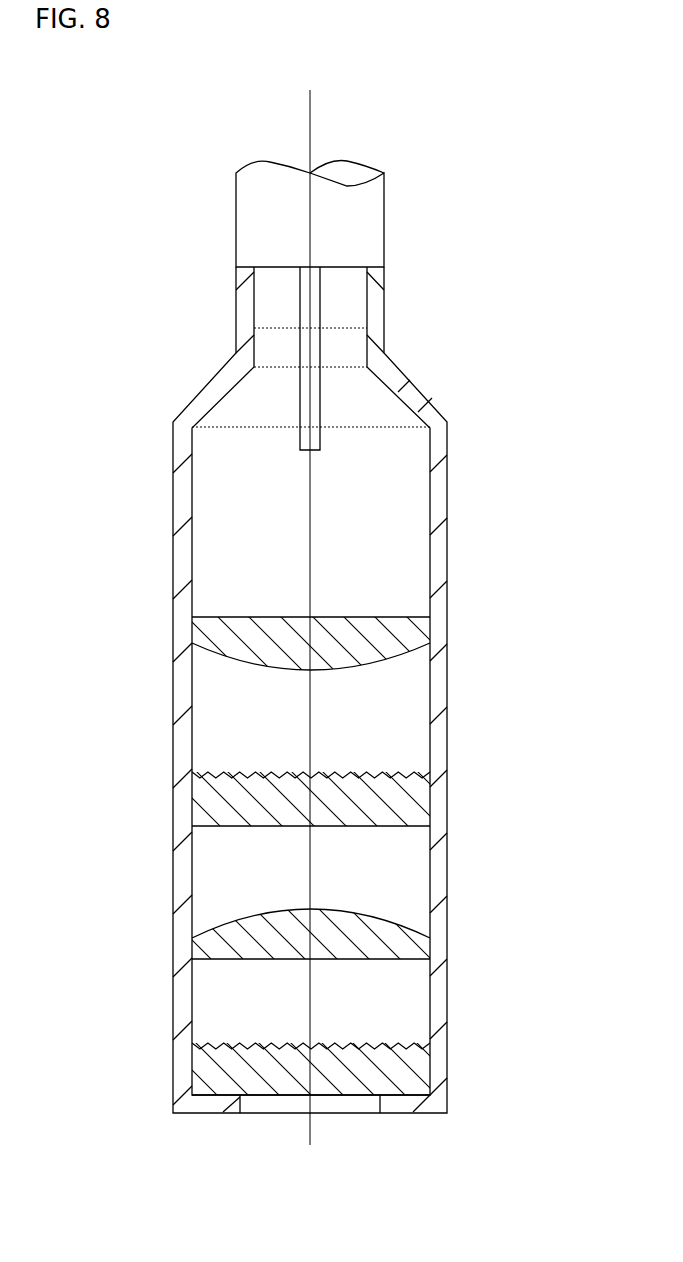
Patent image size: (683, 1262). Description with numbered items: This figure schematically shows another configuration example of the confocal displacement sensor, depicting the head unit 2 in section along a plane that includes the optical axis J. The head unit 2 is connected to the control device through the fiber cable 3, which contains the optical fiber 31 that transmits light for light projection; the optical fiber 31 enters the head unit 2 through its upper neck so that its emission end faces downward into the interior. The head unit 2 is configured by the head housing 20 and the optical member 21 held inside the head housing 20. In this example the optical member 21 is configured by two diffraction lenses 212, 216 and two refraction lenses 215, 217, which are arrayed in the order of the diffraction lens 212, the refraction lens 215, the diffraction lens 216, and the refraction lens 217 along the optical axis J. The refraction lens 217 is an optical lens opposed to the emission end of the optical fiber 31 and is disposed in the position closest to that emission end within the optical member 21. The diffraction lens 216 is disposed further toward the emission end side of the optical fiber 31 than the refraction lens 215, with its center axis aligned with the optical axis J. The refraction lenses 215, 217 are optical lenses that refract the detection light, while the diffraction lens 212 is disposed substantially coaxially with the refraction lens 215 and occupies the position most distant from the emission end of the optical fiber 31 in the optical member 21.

The head unit 2 is at (367, 690).
The fiber cable 3 is at (255, 218).
The optical fiber 31 is at (300, 328).
The head housing 20 is at (450, 478).
The optical member 21 is at (367, 845).
The diffraction lens 212 is at (343, 1064).
The refraction lens 215 is at (403, 940).
The diffraction lens 216 is at (415, 797).
The refraction lens 217 is at (415, 635).
The optical axis J is at (310, 497).